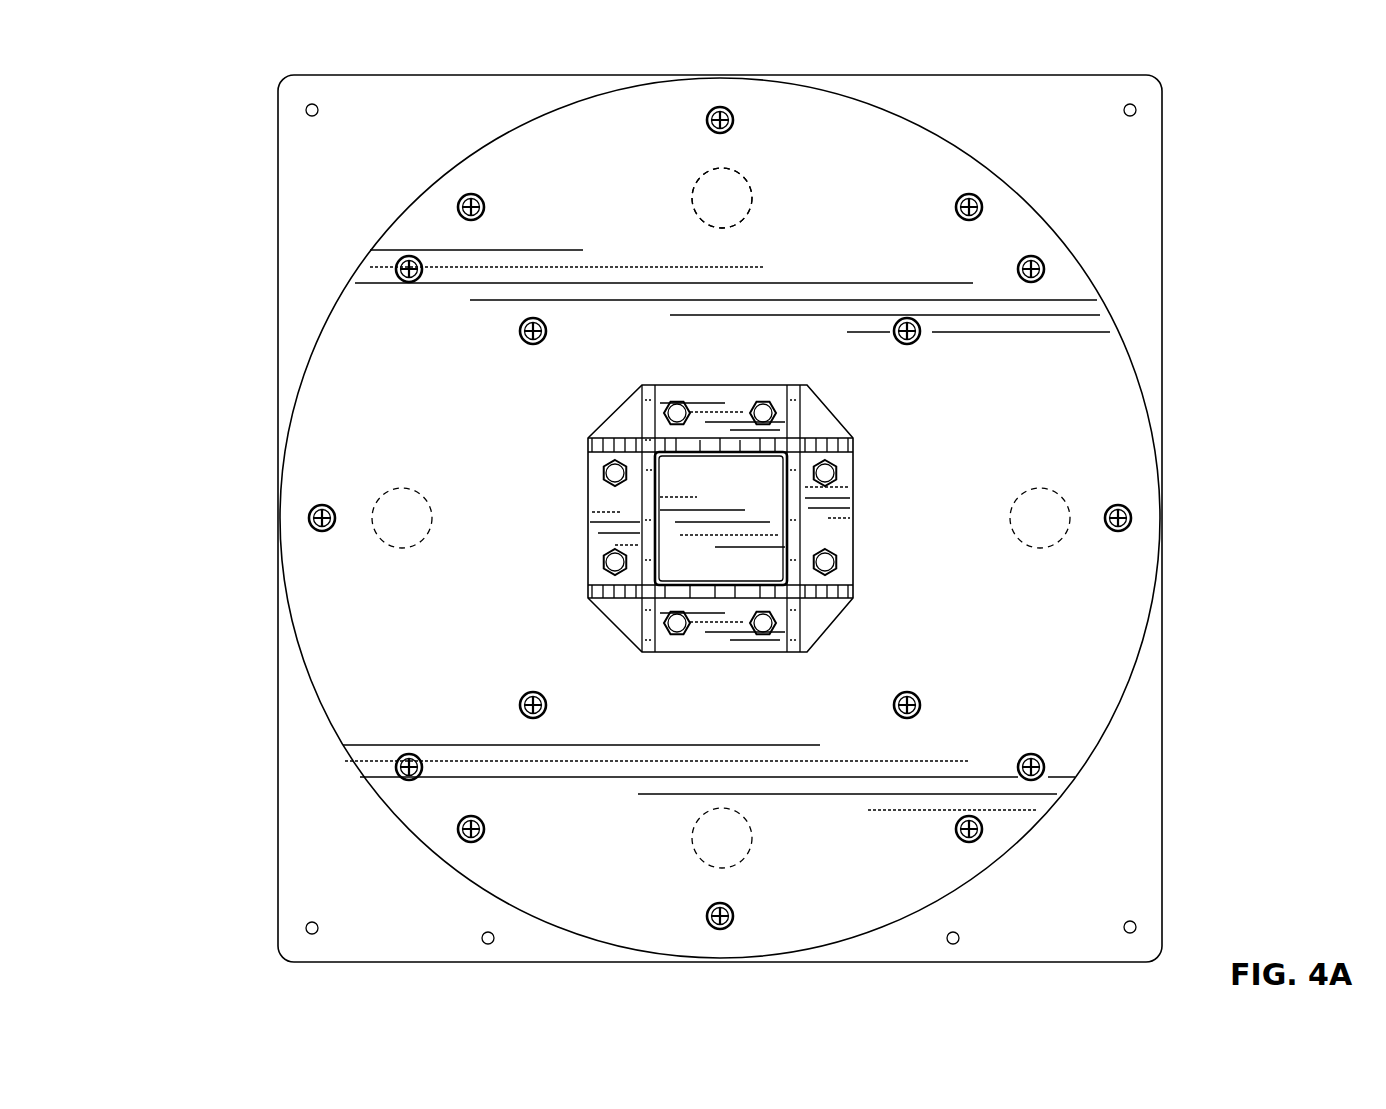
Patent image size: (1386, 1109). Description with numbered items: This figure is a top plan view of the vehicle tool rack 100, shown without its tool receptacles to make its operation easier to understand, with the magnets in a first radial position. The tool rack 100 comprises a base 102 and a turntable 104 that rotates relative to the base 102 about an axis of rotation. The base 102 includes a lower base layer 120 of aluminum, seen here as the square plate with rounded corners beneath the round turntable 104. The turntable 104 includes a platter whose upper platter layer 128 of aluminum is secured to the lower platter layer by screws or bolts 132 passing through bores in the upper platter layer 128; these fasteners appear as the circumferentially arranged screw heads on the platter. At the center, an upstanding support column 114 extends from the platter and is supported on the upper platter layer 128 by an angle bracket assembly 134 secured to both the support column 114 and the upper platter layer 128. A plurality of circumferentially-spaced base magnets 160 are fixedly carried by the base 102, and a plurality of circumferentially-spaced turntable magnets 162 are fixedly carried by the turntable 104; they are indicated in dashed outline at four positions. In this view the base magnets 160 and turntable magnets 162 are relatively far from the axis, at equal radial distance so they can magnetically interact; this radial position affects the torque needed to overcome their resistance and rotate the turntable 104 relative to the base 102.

The vehicle tool rack 100 is at (182, 174).
The base 102 is at (268, 415).
The turntable 104 is at (390, 828).
The support column 114 is at (790, 513).
The lower base layer 120 is at (298, 755).
The upper platter layer 128 is at (403, 225).
The screws or bolts 132 is at (465, 196).
The angle bracket assembly 134 is at (725, 388).
The base magnets 160 is at (750, 186).
The turntable magnets 162 is at (722, 198).